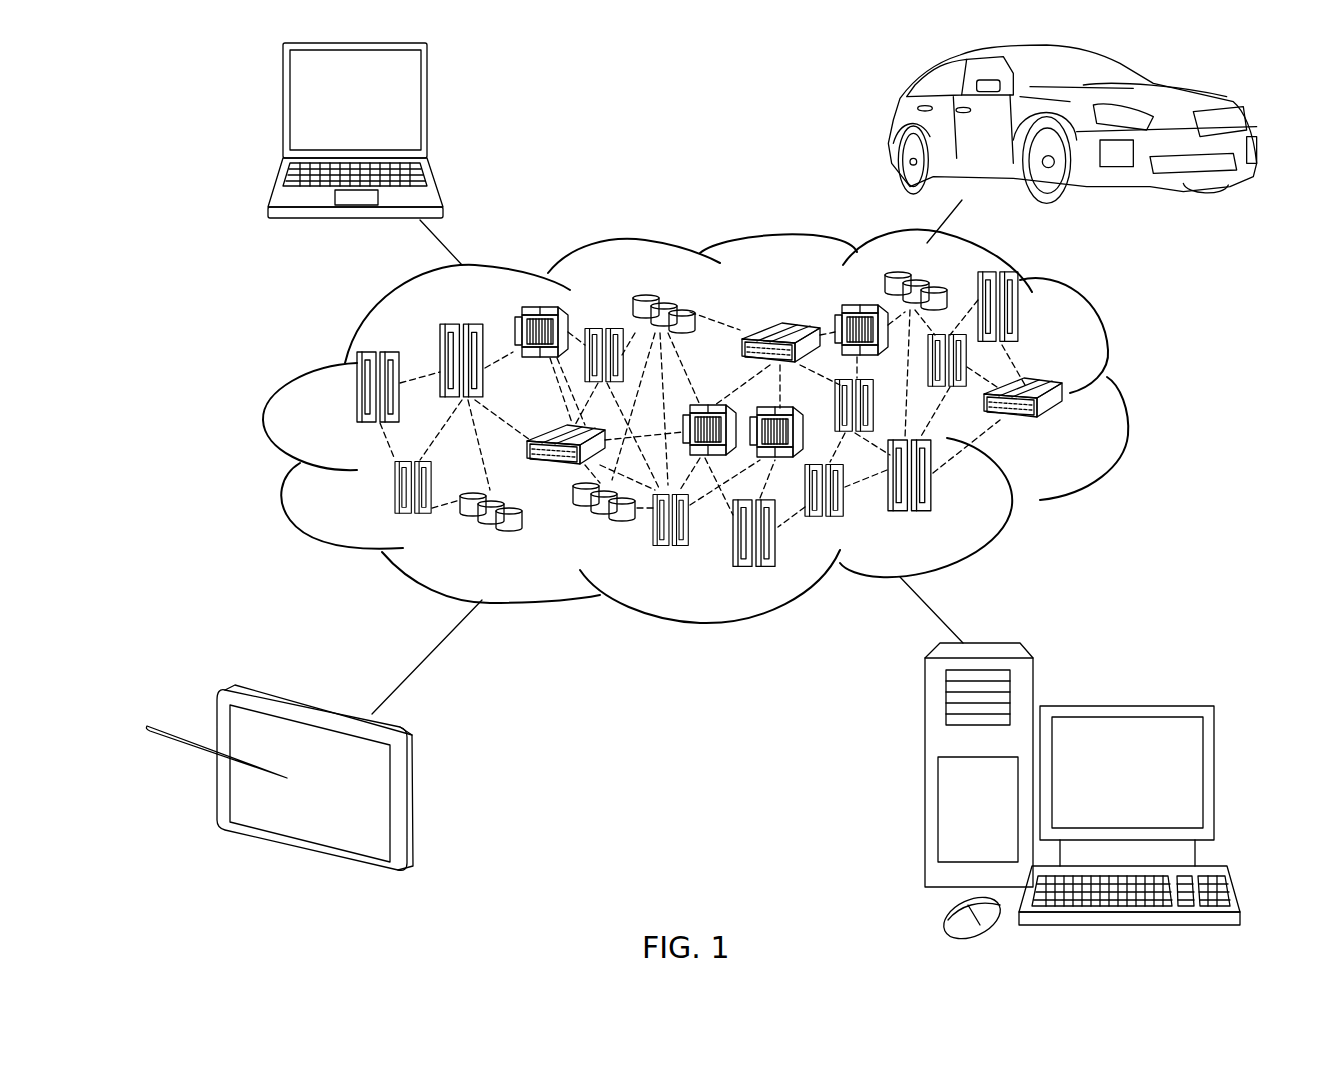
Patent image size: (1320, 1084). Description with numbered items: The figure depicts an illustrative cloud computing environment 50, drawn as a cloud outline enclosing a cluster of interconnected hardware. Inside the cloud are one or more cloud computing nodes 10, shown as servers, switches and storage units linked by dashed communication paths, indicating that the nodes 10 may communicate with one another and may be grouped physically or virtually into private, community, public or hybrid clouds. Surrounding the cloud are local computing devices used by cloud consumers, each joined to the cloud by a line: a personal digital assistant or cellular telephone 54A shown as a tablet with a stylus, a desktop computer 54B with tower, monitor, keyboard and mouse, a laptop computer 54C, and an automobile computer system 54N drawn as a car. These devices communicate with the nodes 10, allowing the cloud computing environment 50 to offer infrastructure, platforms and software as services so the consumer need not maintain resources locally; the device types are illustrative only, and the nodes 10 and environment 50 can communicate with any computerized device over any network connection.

The cloud computing nodes 10 is at (1074, 435).
The cloud computing environment 50 is at (1125, 397).
The personal digital assistant (PDA) or cellular telephone 54A is at (418, 803).
The desktop computer 54B is at (1125, 705).
The laptop computer 54C is at (427, 112).
The automobile computer system 54N is at (892, 127).